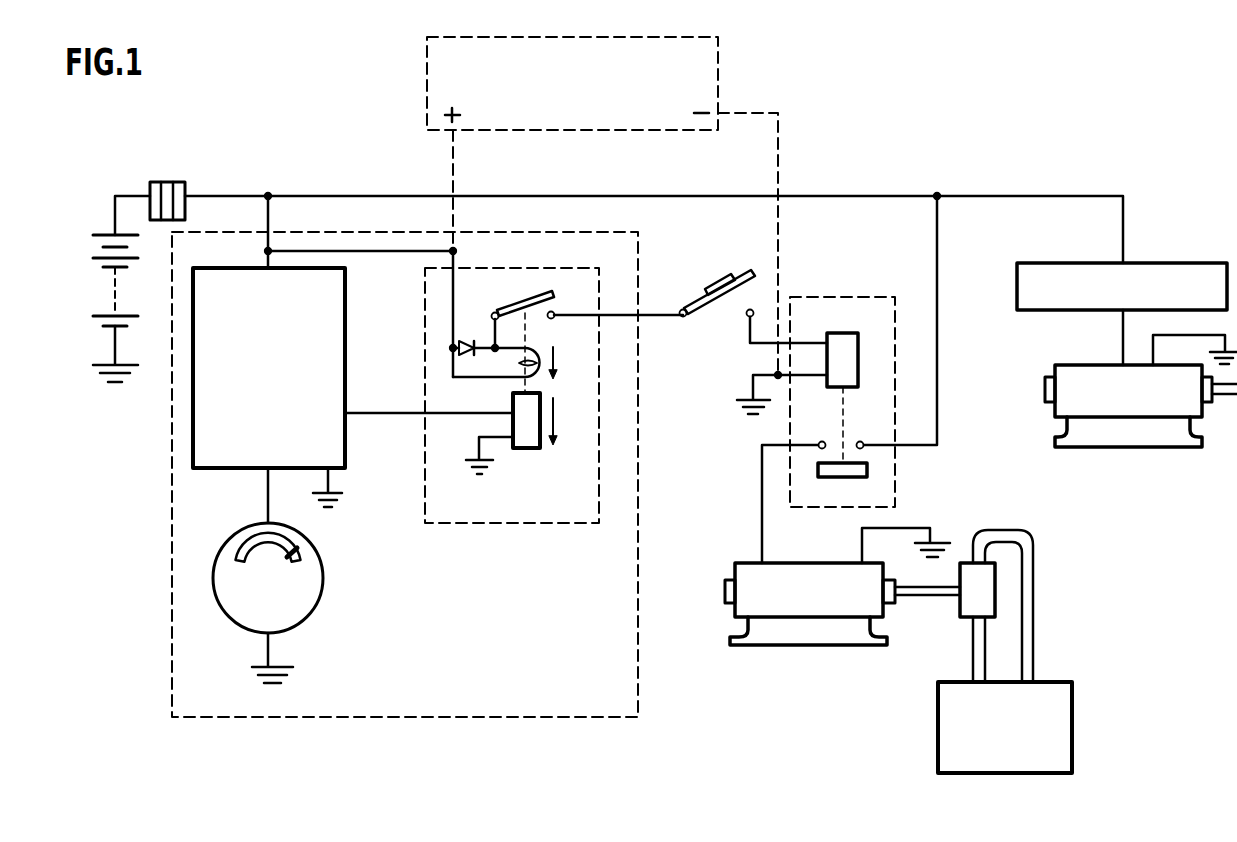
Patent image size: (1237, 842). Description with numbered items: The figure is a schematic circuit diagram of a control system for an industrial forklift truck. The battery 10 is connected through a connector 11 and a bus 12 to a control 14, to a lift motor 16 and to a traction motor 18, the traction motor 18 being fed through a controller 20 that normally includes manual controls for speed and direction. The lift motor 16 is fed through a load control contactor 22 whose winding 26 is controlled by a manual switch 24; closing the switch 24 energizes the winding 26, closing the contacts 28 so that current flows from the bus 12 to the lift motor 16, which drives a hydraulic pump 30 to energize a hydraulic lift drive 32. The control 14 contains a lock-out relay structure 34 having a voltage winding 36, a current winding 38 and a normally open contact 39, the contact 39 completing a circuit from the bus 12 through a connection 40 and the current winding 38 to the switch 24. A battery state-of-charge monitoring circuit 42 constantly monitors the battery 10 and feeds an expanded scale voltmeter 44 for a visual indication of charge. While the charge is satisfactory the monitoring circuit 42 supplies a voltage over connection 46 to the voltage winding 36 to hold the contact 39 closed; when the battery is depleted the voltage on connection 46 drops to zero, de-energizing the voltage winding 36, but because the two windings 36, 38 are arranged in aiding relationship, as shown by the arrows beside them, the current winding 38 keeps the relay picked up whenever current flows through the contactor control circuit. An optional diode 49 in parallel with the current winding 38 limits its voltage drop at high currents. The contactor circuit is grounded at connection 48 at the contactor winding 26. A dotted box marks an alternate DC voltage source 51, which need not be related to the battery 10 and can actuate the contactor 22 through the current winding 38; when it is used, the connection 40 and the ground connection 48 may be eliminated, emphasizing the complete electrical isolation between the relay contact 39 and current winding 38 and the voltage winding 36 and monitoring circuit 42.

The battery 10 is at (104, 232).
The connector 11 is at (187, 184).
The bus 12 is at (537, 195).
The control 14 is at (313, 232).
The lift motor 16 is at (732, 616).
The traction motor 18 is at (1052, 404).
The controller 20 is at (1043, 262).
The contactor 22 is at (857, 296).
The manual switch 24 is at (745, 268).
The winding 26 is at (860, 316).
The contacts 28 is at (858, 478).
The hydraulic pump 30 is at (970, 600).
The hydraulic lift drive 32 is at (1100, 673).
The lock-out relay structure 34 is at (463, 524).
The voltage winding 36 is at (527, 438).
The current winding 38 is at (543, 347).
The contact 39 is at (527, 300).
The connection 40 is at (290, 364).
The battery state-of-charge monitoring circuit 42 is at (347, 386).
The expanded scale voltmeter 44 is at (327, 563).
The connection 46 is at (396, 413).
The connection to ground 48 is at (752, 386).
The diode 49 is at (473, 340).
The alternate DC voltage source 51 is at (720, 98).